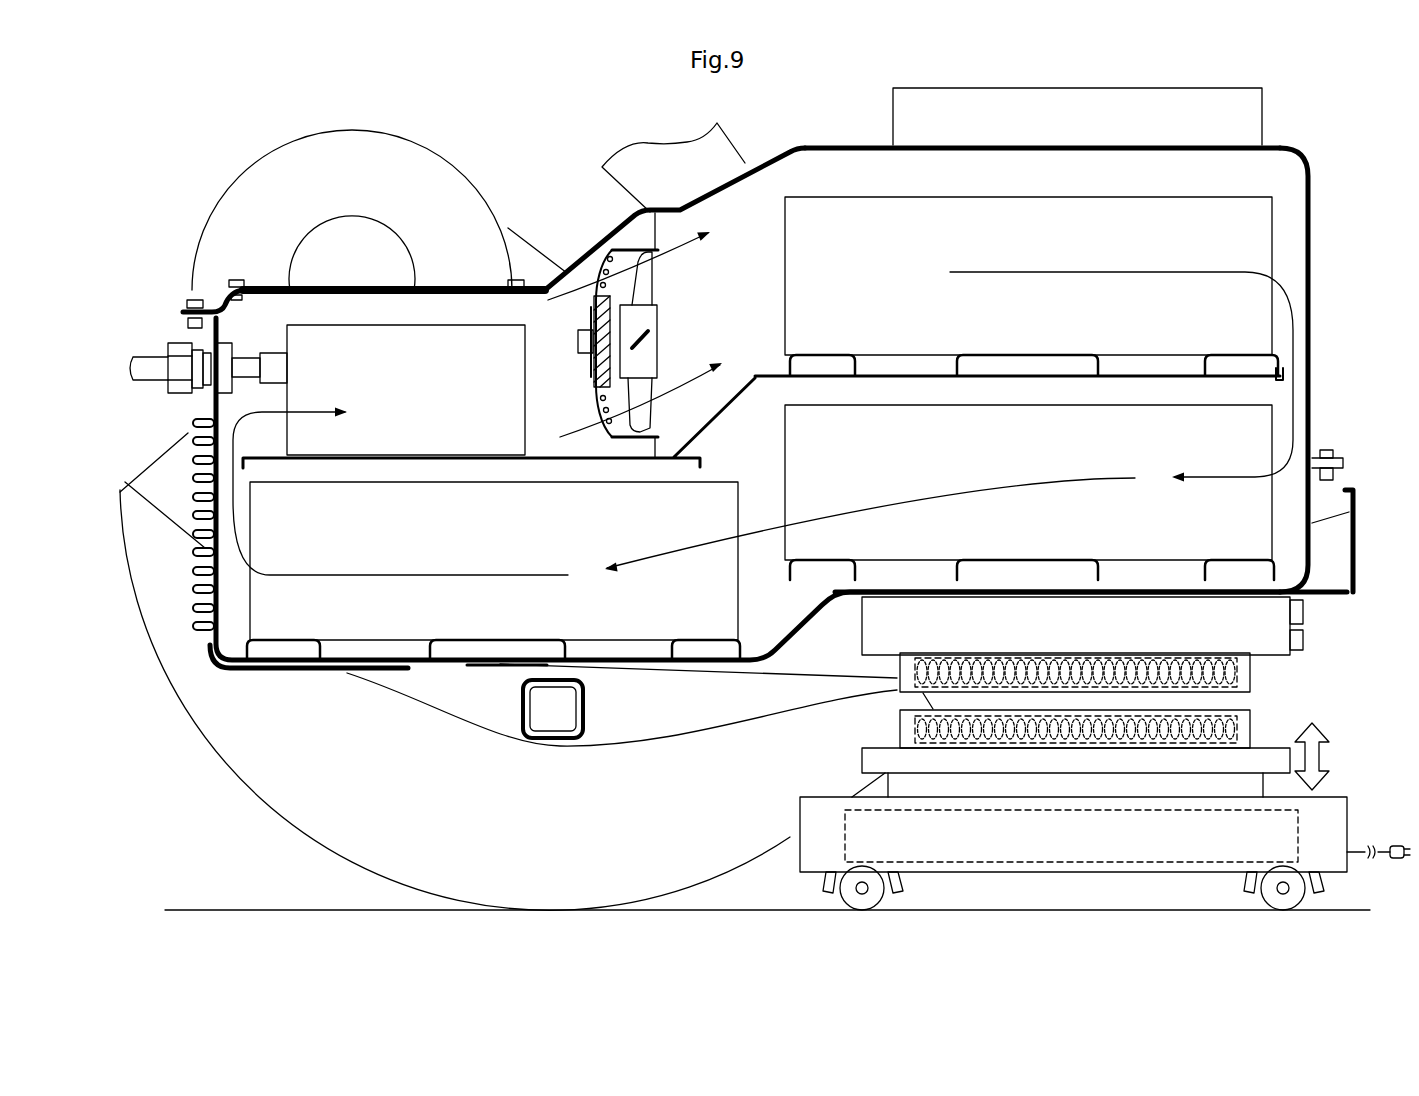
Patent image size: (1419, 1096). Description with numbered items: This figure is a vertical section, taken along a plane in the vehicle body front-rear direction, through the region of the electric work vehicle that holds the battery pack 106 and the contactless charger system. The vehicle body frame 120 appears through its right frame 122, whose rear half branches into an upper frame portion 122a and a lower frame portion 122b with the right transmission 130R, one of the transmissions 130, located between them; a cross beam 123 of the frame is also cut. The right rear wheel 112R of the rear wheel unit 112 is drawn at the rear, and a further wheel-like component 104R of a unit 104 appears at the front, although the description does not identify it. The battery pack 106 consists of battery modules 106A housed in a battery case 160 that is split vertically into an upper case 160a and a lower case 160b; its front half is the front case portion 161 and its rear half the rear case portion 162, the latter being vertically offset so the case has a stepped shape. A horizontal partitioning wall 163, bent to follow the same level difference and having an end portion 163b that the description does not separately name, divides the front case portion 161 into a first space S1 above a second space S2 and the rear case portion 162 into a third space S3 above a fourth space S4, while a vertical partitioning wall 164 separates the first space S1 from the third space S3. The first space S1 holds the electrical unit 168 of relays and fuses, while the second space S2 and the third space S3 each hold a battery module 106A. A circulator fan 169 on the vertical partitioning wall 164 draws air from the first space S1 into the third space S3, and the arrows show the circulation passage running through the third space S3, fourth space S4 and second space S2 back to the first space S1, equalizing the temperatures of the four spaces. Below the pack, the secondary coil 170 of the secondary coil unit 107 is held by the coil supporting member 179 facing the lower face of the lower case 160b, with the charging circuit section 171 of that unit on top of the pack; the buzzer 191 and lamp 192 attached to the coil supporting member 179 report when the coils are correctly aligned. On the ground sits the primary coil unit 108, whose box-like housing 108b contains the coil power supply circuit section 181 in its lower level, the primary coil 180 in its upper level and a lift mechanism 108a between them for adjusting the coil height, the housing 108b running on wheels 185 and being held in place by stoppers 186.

The right front wheel 104R is at (220, 207).
The front wheel 104 is at (312, 210).
The right transmission 130R is at (512, 240).
The rear arm 130 is at (441, 209).
The battery pack 106 is at (1306, 156).
The battery module 106A is at (1105, 193).
The rear case portion 162 is at (1309, 241).
The upper case 160a is at (927, 145).
The lower case 160b is at (432, 658).
The battery case 160 is at (745, 449).
The front case portion 161 is at (210, 412).
The vehicle body frame 120 is at (622, 471).
The upper frame portion 122a is at (717, 123).
The lower frame portion 122b is at (687, 712).
The right frame 122 is at (622, 453).
The cross beam 123 is at (588, 710).
The right rear wheel 112R is at (278, 800).
The rear wheel unit 112 is at (455, 671).
The first space S1 is at (428, 383).
The second space S2 is at (467, 568).
The third space S3 is at (935, 261).
The fourth space S4 is at (944, 470).
The horizontal partitioning wall 163 is at (1137, 372).
The partition plate end 163b is at (1284, 368).
The vertical partitioning wall 164 is at (660, 230).
The electrical unit 168 is at (522, 363).
The circulator fan 169 is at (648, 297).
The charging circuit section 171 is at (1263, 100).
The secondary coil 170 is at (1237, 676).
The secondary coil unit 107 is at (1150, 388).
The coil supporting member 179 is at (990, 598).
The buzzer 191 is at (1305, 612).
The lamp 192 is at (1305, 648).
The primary coil unit 108 is at (1057, 811).
The primary coil 180 is at (912, 728).
The lift mechanism 108a is at (888, 787).
The housing 108b is at (810, 826).
The coil power supply circuit section 181 is at (1298, 830).
The wheels 185 is at (830, 893).
The stoppers 186 is at (905, 888).